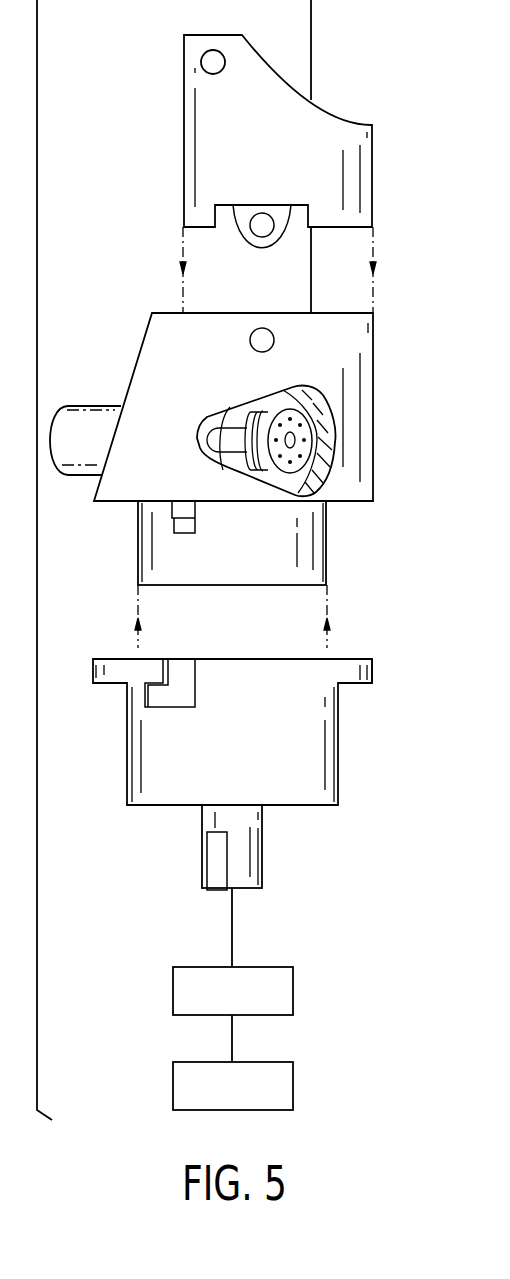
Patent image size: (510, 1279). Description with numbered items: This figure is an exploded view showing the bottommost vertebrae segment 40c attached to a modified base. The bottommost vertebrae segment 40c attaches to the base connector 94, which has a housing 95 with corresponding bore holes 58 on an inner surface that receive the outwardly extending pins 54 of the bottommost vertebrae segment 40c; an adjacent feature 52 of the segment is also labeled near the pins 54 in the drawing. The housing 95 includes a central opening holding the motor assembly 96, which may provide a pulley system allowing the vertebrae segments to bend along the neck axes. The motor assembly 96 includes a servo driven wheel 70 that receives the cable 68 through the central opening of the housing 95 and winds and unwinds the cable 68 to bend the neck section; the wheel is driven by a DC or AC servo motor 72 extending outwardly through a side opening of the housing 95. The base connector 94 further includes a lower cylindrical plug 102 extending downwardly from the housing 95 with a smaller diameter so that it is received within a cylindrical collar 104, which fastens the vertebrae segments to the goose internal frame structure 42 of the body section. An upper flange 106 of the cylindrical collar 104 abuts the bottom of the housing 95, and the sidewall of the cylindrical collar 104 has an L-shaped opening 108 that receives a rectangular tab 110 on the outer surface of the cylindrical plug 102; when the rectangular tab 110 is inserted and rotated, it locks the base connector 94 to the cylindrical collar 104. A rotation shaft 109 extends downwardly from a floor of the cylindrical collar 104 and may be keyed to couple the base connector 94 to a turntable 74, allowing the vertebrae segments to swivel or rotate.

The cable 68 is at (312, 33).
The bottommost vertebrae segment 40c is at (352, 180).
The recess 52 is at (247, 235).
The outwardly extending pins 54 is at (270, 230).
The bore holes 58 is at (250, 340).
The servo motor 72 is at (70, 440).
The housing 95 is at (348, 397).
The motor assembly 96 is at (239, 421).
The servo driven wheel 70 is at (297, 458).
The base connector 94 is at (384, 472).
The rectangular tab 110 is at (180, 523).
The lower cylindrical plug 102 is at (238, 558).
The L-shaped opening 108 is at (178, 663).
The upper flange 106 is at (348, 668).
The cylindrical collar 104 is at (308, 755).
The rotation shaft 109 is at (242, 847).
The turntable 74 is at (173, 988).
The goose internal frame structure 42 is at (173, 1083).